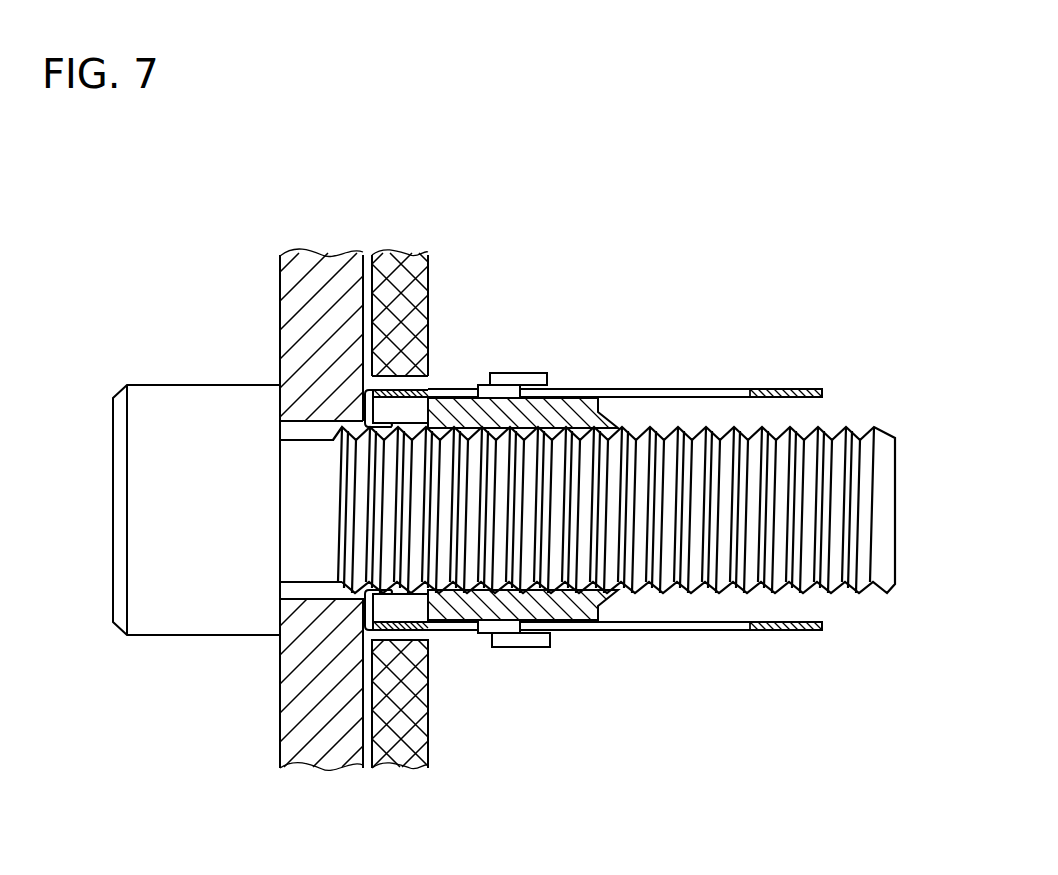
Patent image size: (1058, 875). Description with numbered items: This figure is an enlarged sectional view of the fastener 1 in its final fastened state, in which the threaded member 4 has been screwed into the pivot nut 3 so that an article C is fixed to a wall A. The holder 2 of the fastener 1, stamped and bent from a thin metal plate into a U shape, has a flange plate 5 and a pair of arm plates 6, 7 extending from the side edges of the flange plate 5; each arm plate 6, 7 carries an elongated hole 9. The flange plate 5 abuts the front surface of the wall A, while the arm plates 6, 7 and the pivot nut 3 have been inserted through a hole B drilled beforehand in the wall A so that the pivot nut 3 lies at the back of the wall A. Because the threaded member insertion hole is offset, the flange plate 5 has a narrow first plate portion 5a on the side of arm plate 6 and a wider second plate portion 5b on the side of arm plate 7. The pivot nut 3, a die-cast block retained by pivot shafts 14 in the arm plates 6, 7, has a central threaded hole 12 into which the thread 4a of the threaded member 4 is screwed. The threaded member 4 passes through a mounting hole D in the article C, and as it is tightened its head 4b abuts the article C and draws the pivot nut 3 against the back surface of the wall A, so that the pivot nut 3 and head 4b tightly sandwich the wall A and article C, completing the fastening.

The fastener 1 is at (815, 665).
The holder 2 is at (806, 356).
The pivot nut 3 is at (548, 415).
The threaded member 4 is at (875, 630).
The thread 4a is at (405, 483).
The head 4b is at (162, 605).
The flange plate 5 is at (362, 603).
The first plate portion 5a is at (368, 397).
The second plate portion 5b is at (362, 602).
The arm plate 6 is at (690, 395).
The arm plate 7 is at (775, 630).
The elongated hole 9 is at (647, 630).
The threaded hole 12 is at (577, 440).
The pivot shaft 14 is at (520, 647).
The wall A is at (397, 278).
The hole B is at (400, 384).
The article C is at (297, 278).
The mounting hole D is at (280, 420).